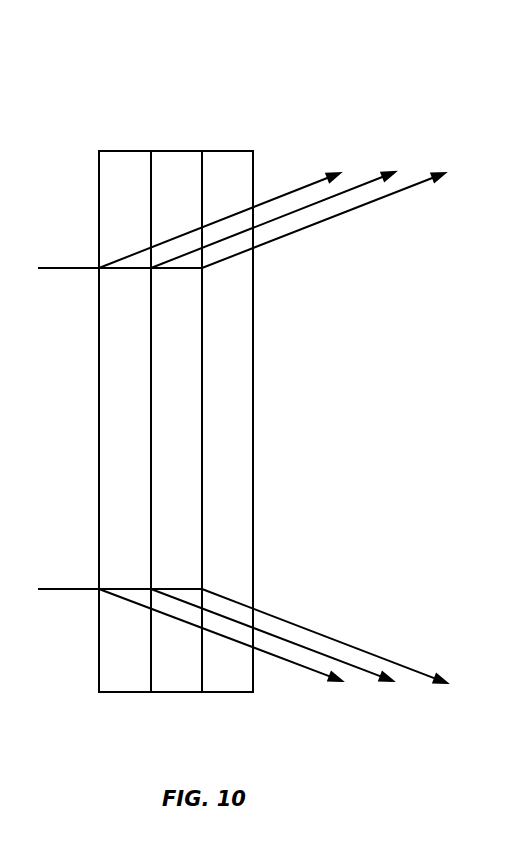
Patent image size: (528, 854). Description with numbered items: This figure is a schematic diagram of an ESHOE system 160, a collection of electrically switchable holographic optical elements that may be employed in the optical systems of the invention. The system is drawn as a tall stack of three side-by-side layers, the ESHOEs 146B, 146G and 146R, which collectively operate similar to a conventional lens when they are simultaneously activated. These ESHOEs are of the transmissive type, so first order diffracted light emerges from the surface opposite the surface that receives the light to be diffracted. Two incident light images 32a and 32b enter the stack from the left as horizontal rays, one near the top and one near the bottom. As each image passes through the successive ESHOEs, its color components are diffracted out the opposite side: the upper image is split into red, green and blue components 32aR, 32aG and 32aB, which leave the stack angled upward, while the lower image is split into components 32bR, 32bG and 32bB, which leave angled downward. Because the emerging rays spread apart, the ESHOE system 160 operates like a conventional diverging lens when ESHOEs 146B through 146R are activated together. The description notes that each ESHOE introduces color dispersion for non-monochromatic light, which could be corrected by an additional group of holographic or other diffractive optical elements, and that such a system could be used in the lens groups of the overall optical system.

The ESHOE system 160 is at (213, 354).
The ESHOE 146B is at (158, 392).
The ESHOE 146G is at (194, 406).
The ESHOE 146R is at (258, 406).
The incident light image 32a is at (108, 252).
The incident light image 32b is at (108, 572).
The red component of incident light image 32aR is at (246, 194).
The green component of incident light image 32aG is at (298, 205).
The blue component of incident light image 32aB is at (348, 220).
The red component of incident light image 32bR is at (220, 659).
The green component of incident light image 32bG is at (289, 654).
The blue component of incident light image 32bB is at (348, 636).